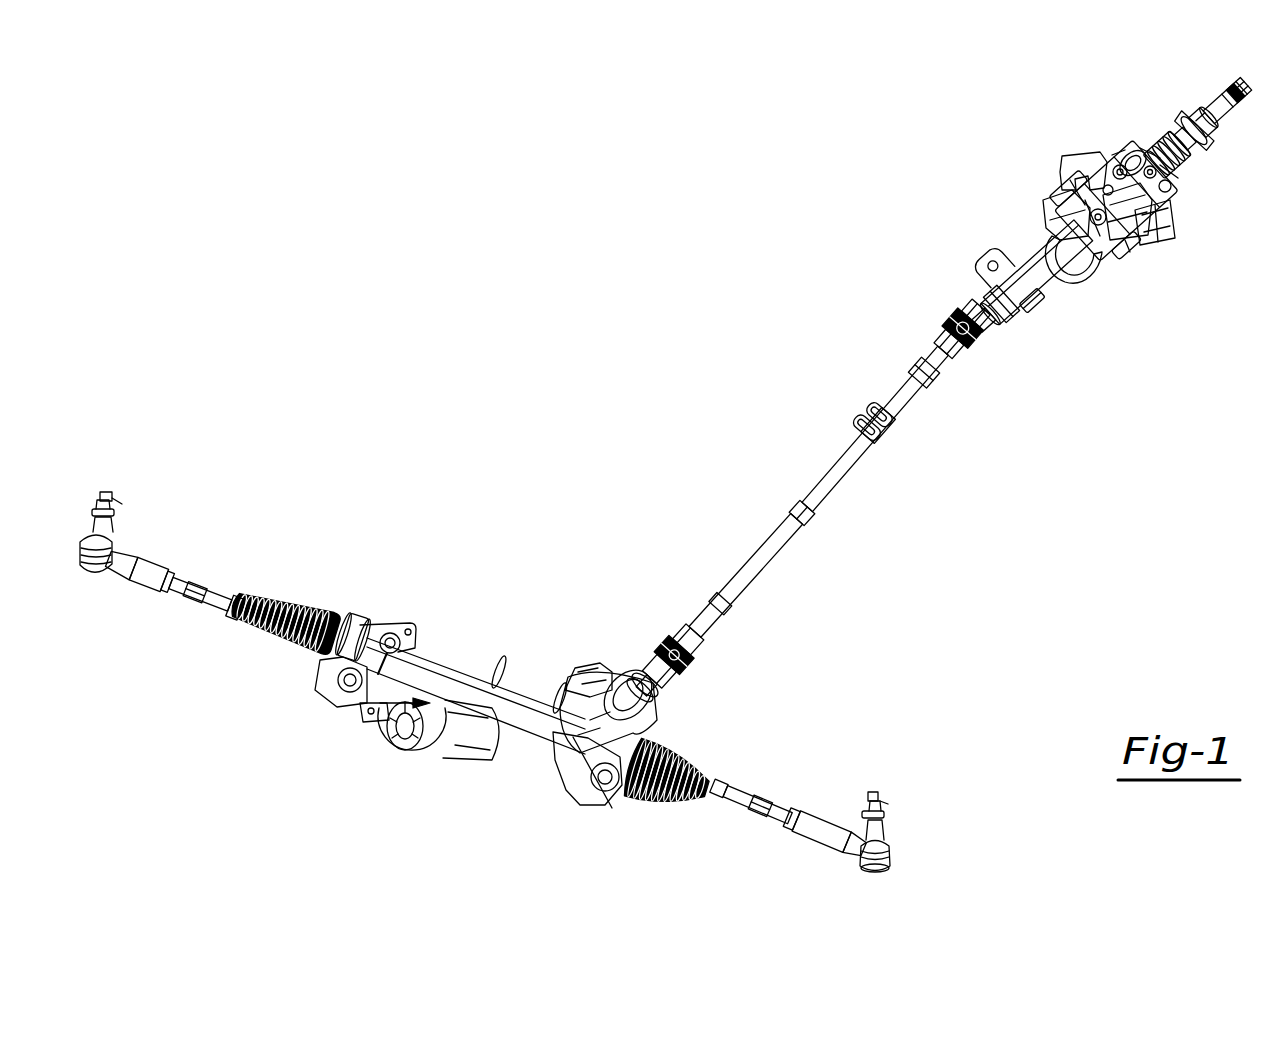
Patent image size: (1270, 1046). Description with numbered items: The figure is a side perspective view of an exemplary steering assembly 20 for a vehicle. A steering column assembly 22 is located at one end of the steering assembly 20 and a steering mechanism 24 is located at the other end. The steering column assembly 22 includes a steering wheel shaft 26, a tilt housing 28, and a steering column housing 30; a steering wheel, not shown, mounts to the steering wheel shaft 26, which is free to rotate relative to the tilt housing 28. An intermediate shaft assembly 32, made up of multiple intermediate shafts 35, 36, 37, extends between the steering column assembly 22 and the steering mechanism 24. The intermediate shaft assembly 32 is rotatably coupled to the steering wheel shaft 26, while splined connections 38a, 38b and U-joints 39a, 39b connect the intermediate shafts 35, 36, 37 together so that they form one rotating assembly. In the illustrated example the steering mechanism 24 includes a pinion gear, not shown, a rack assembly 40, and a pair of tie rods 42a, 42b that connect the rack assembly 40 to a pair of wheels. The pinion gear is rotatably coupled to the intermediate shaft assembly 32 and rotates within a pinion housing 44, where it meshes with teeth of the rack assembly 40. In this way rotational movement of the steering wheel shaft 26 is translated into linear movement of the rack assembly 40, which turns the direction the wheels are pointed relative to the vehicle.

The steering assembly 20 is at (512, 333).
The steering column assembly 22 is at (1215, 178).
The steering mechanism 24 is at (265, 775).
The steering wheel shaft 26 is at (1215, 108).
The tilt housing 28 is at (1168, 142).
The steering column housing 30 is at (1030, 248).
The intermediate shaft assembly 32 is at (840, 490).
The intermediate shaft 35 is at (845, 462).
The intermediate shaft 36 is at (966, 318).
The intermediate shaft 37 is at (758, 560).
The splined connection 38a is at (1007, 307).
The splined connection 38b is at (795, 510).
The U-joint 39a is at (952, 355).
The U-joint 39b is at (668, 640).
The rack assembly 40 is at (466, 670).
The tie rod 42a is at (150, 578).
The tie rod 42b is at (813, 830).
The pinion housing 44 is at (608, 806).